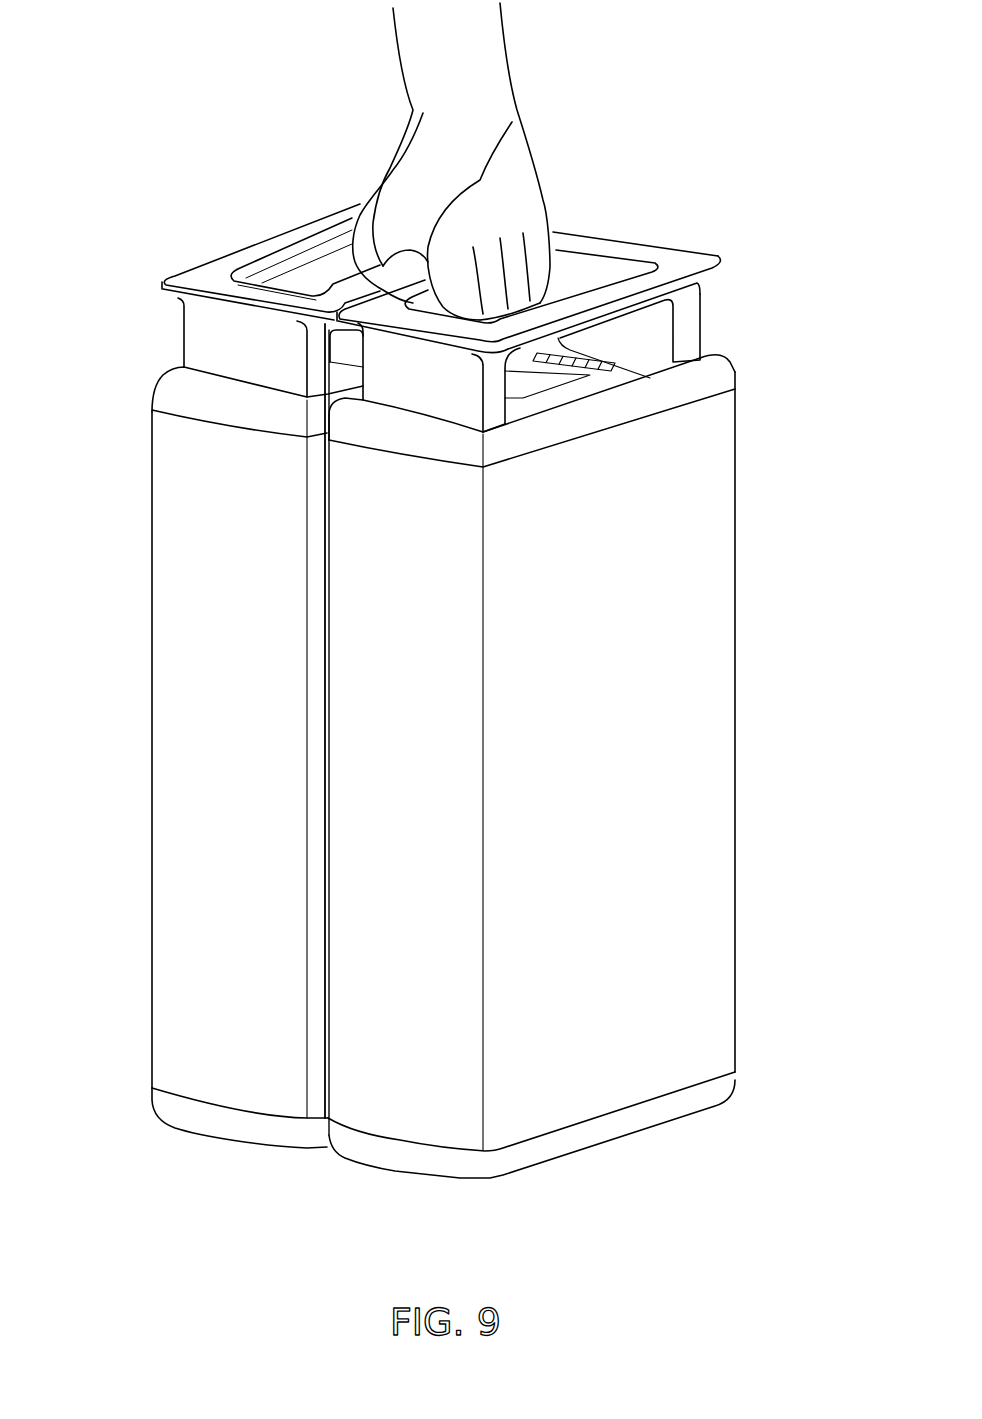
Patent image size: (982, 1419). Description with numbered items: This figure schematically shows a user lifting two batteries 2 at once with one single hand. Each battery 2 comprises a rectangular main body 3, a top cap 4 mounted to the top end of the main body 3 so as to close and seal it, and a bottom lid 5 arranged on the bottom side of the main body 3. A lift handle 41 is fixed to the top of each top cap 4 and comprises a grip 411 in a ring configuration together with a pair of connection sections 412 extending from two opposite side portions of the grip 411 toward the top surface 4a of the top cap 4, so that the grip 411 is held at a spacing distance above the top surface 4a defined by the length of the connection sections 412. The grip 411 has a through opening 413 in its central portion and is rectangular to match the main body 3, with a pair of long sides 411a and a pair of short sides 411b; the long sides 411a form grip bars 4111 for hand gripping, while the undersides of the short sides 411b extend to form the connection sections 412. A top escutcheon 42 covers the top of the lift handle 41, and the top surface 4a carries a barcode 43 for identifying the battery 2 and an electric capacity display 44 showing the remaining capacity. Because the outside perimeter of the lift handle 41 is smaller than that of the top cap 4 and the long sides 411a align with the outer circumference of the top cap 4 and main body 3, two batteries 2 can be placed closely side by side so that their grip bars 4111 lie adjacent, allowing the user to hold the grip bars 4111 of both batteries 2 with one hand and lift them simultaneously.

The battery 2 is at (437, 606).
The main body 3 is at (160, 740).
The top cap 4 is at (453, 447).
The top surface 4a is at (537, 406).
The bottom lid 5 is at (212, 1122).
The lift handle 41 is at (383, 223).
The top escutcheon 42 is at (208, 274).
The barcode 43 is at (545, 385).
The electric capacity display 44 is at (615, 366).
The grip 411 is at (437, 323).
The long sides 411a is at (451, 223).
The short sides 411b is at (643, 240).
The connection sections 412 is at (193, 340).
The through opening 413 is at (317, 277).
The grip bars 4111 is at (390, 211).